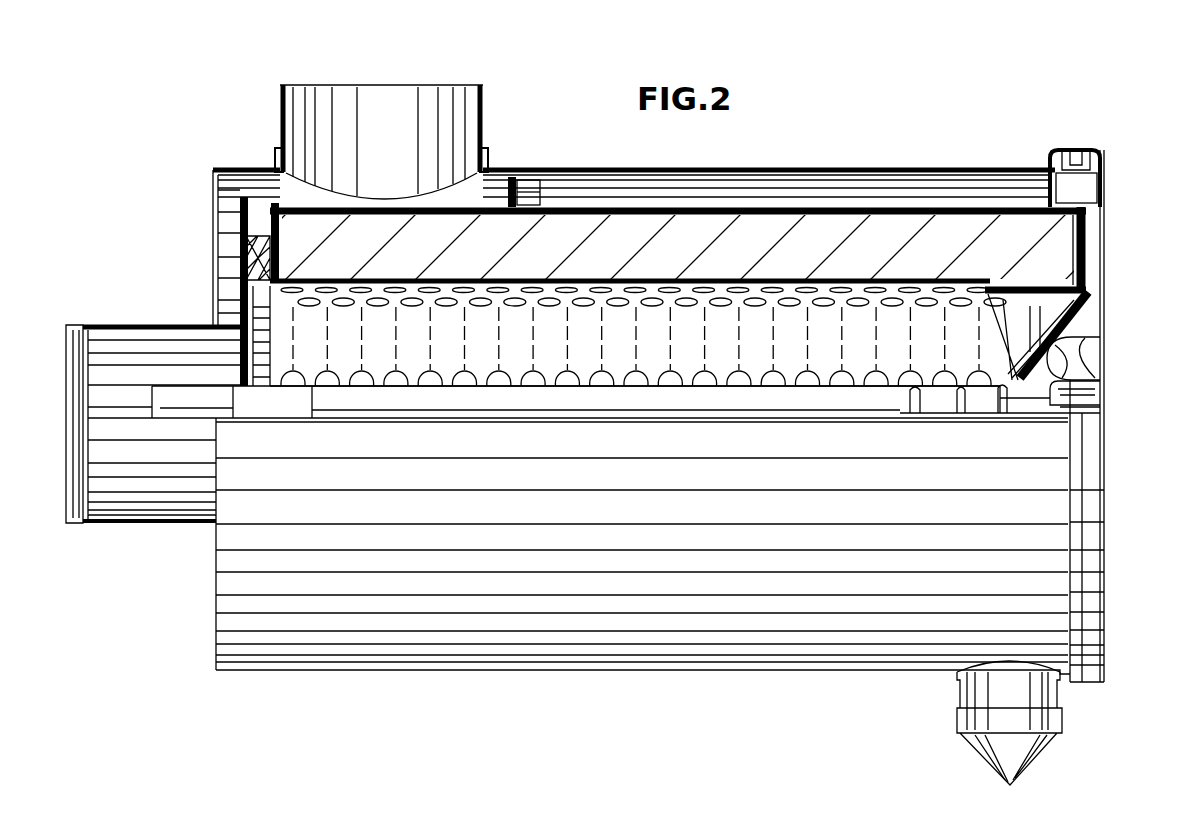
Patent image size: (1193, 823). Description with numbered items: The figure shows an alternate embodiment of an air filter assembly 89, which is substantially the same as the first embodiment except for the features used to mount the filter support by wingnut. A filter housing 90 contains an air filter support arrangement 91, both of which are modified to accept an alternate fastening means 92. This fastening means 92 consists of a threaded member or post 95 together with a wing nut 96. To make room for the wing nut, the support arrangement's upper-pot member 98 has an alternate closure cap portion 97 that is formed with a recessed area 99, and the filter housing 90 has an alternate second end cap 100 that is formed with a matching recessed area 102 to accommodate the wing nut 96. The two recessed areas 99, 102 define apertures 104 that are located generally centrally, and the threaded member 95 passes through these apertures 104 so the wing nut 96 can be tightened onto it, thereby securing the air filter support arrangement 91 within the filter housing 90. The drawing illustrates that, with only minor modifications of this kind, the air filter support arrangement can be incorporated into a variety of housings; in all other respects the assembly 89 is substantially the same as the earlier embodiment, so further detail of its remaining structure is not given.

The air filter assembly 89 is at (807, 150).
The filter housing 90 is at (345, 672).
The air filter support arrangement 91 is at (1102, 211).
The fastening means 92 is at (1106, 362).
The threaded member 95 is at (980, 398).
The wing nut 96 is at (1102, 395).
The closure cap portion 97 is at (1092, 241).
The upper-pot member 98 is at (1018, 209).
The recessed area 99 is at (1104, 306).
The second end cap 100 is at (1101, 182).
The recessed area 102 is at (1064, 328).
The apertures 104 is at (1090, 412).